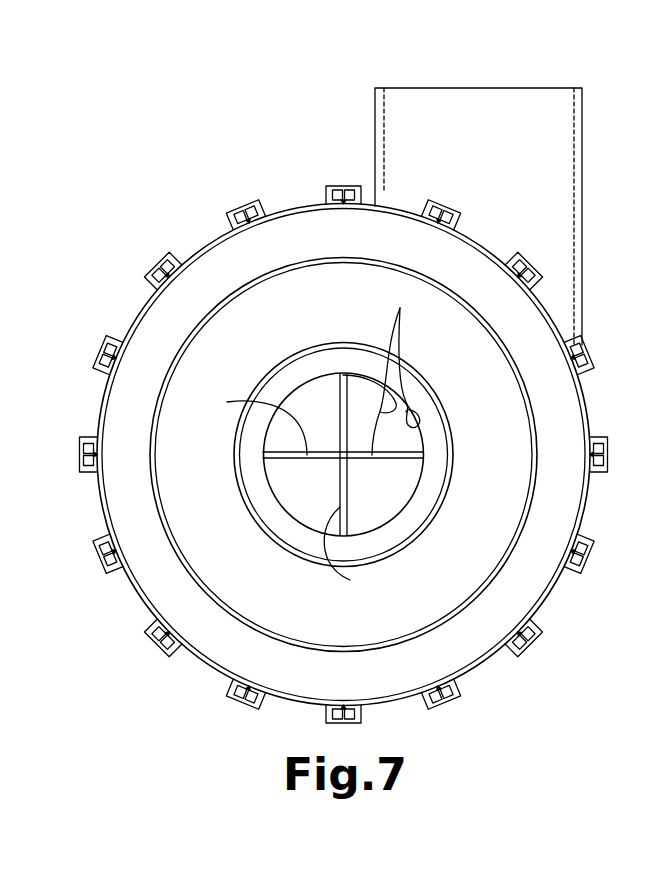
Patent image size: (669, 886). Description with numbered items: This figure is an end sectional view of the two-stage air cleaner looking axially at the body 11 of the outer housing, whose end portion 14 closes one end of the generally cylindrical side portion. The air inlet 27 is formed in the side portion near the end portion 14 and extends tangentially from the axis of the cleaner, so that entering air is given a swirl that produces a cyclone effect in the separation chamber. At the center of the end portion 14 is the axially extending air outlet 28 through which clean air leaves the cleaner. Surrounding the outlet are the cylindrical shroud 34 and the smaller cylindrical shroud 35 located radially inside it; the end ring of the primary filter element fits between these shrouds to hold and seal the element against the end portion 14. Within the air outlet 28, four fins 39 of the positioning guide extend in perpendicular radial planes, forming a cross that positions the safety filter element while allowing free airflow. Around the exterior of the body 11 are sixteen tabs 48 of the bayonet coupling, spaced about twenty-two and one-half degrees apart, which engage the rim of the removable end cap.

The body 11 is at (130, 313).
The end portion 14 is at (300, 331).
The air inlet 27 is at (542, 183).
The air outlet 28 is at (420, 430).
The cylindrical shroud 34 is at (515, 523).
The smaller cylindrical shroud 35 is at (453, 467).
The fins 39 is at (227, 402).
The tabs 48 is at (241, 207).